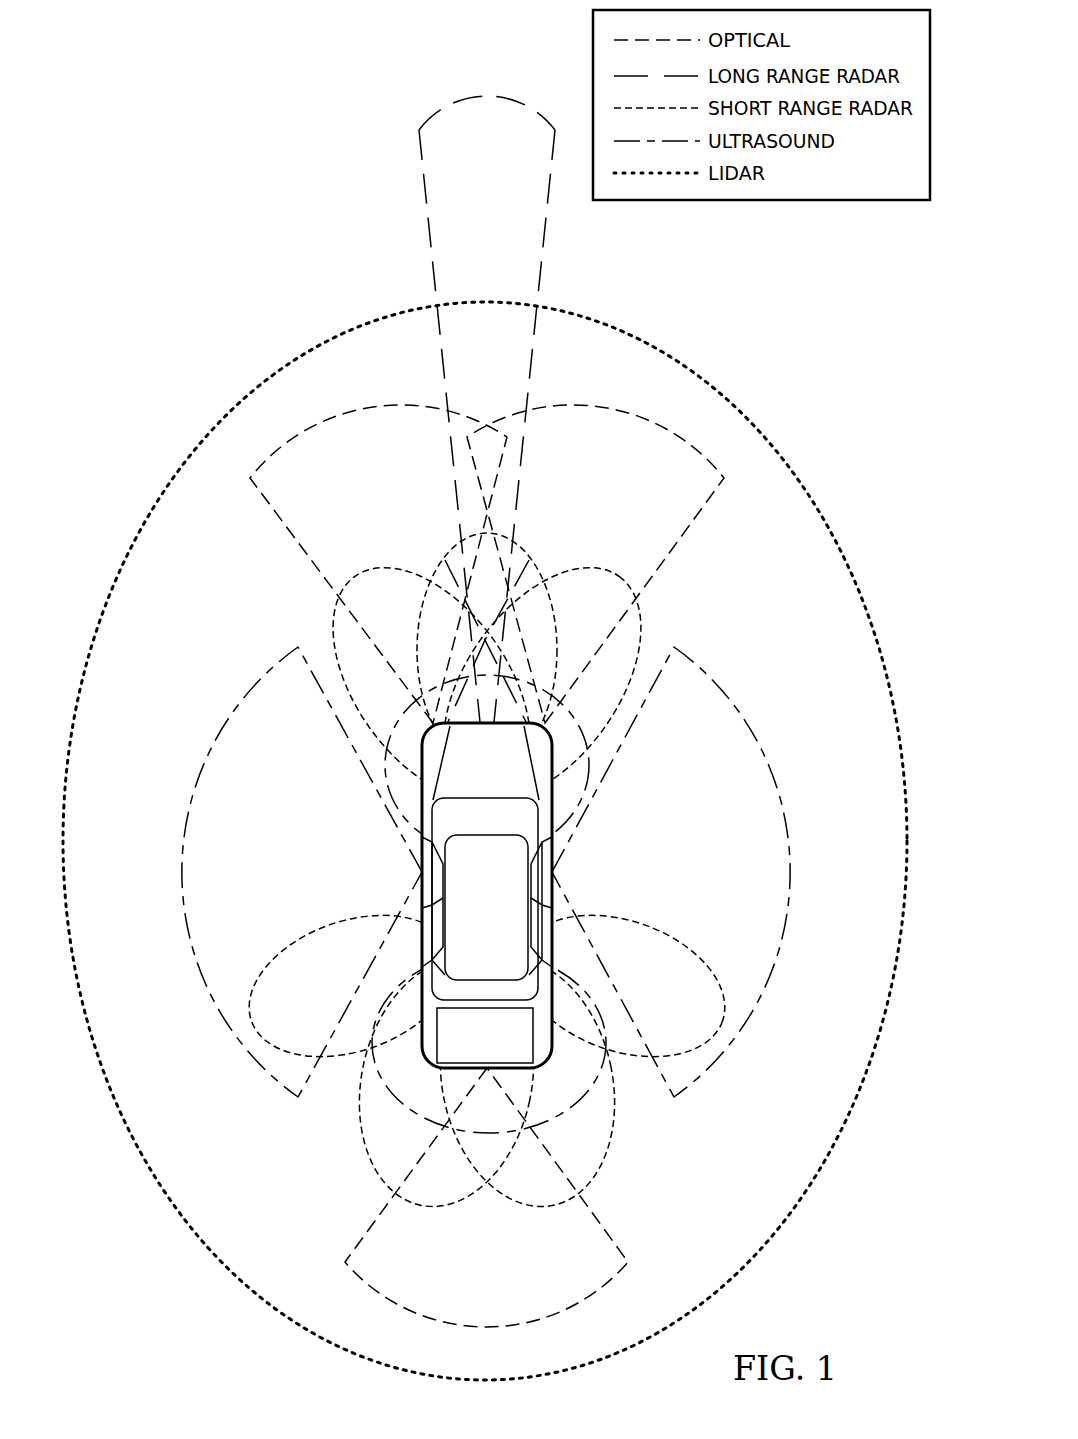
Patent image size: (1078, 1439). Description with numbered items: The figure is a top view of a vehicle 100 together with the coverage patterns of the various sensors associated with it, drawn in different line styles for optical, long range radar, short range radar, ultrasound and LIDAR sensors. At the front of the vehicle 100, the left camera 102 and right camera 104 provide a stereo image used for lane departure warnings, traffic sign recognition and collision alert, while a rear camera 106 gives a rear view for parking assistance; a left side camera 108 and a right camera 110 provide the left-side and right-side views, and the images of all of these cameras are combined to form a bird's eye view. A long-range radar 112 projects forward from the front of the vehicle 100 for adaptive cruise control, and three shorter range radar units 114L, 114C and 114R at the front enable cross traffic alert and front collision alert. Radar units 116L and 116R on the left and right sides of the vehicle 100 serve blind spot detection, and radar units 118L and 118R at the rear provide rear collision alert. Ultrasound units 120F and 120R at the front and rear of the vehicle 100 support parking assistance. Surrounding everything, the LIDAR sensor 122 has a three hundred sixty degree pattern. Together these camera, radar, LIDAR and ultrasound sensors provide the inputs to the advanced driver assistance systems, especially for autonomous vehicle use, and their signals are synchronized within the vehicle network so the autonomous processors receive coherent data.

The vehicle 100 is at (466, 923).
The left camera 102 is at (352, 411).
The right camera 104 is at (622, 411).
The rear camera 106 is at (388, 1298).
The left side camera 108 is at (185, 835).
The right camera 110 is at (787, 835).
The long-range radar 112 is at (431, 266).
The shorter range radar unit 114L is at (370, 568).
The shorter range radar unit 114C is at (448, 553).
The shorter range radar unit 114R is at (604, 568).
The radar unit 116L is at (318, 943).
The radar unit 116R is at (656, 943).
The radar unit 118L is at (359, 1132).
The radar unit 118R is at (615, 1132).
The ultrasound unit 120F is at (589, 752).
The ultrasound unit 120R is at (606, 1030).
The LIDAR sensor 122 is at (341, 336).